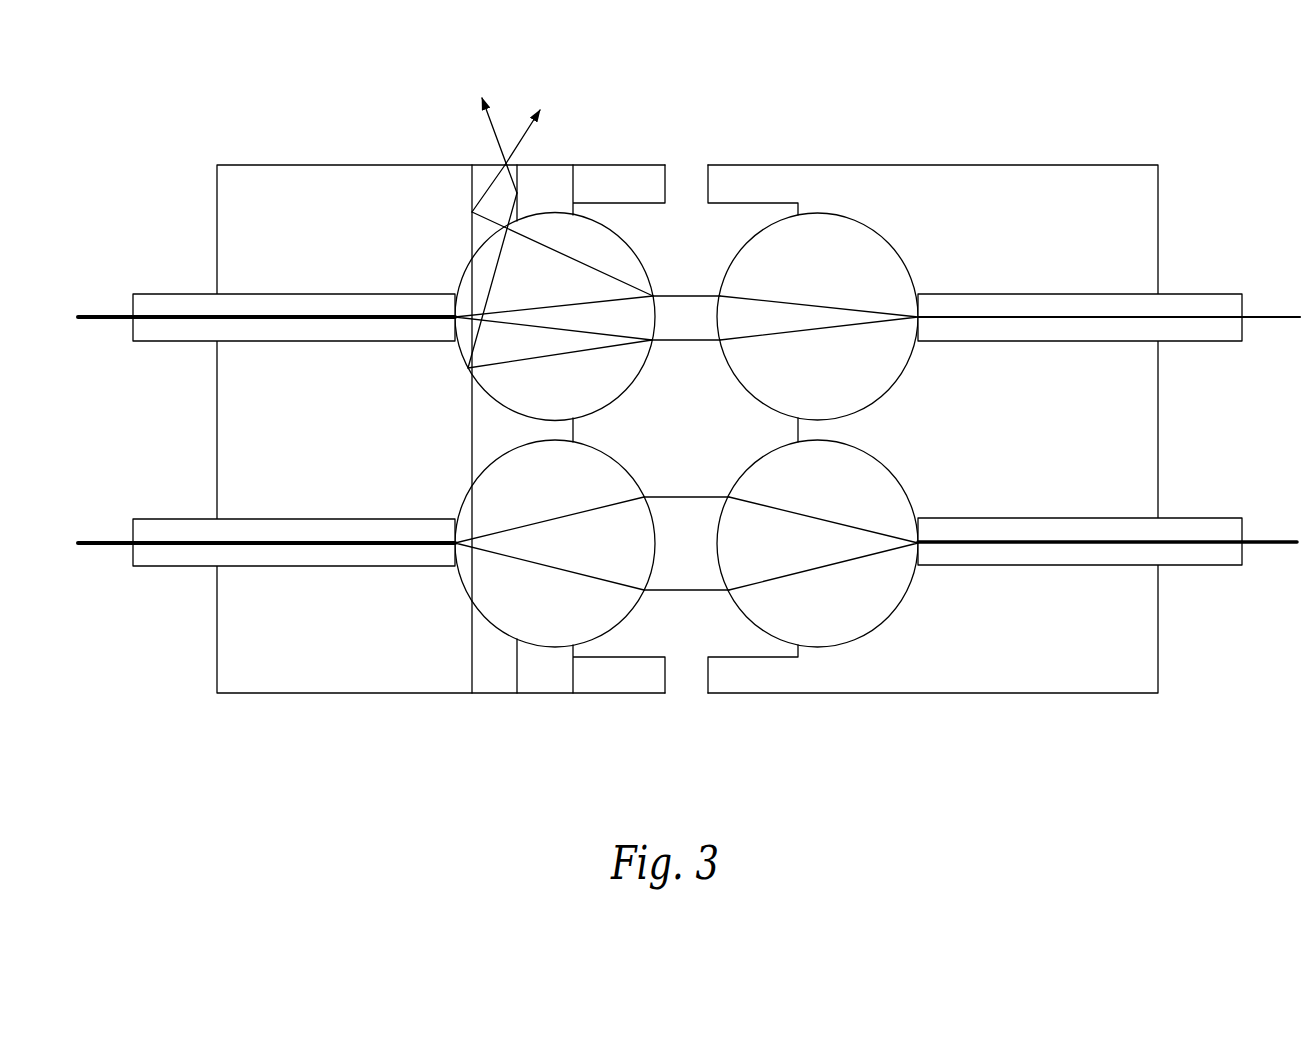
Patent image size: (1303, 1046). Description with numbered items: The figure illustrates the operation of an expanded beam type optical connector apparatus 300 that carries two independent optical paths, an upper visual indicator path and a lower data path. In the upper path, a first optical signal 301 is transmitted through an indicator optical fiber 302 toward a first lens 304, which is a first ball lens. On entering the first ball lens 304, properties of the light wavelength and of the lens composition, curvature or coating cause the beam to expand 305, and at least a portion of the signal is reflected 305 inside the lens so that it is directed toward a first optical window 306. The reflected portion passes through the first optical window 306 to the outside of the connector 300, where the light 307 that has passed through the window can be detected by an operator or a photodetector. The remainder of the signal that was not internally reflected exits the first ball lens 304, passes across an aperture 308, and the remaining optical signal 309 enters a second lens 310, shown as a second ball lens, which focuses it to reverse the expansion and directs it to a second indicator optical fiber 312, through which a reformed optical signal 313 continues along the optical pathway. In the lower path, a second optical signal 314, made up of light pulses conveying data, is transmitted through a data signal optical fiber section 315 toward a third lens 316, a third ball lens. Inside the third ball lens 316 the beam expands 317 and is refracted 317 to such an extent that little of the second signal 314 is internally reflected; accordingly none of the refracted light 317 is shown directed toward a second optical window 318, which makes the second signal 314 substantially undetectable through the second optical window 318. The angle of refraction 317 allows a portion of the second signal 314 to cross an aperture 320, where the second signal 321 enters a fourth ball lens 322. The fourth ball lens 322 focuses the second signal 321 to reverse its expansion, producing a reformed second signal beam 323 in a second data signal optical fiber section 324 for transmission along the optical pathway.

The optical connector apparatus 300 is at (178, 98).
The first optical signal 301 is at (98, 322).
The indicator optical fiber 302 is at (137, 348).
The first lens 304 is at (460, 258).
The expanded and reflected optical signal 305 is at (590, 297).
The first optical window 306 is at (476, 157).
The light passed through first optical window 307 is at (513, 116).
The aperture 308 is at (683, 310).
The remaining optical signal 309 is at (794, 297).
The second lens 310 is at (915, 260).
The second indicator optical fiber 312 is at (1238, 283).
The reformed optical signal 313 is at (1278, 322).
The second optical signal 314 is at (98, 548).
The data signal optical fiber section 315 is at (137, 573).
The third lens 316 is at (460, 486).
The expanded and refracted second signal 317 is at (581, 508).
The second optical window 318 is at (478, 702).
The aperture 320 is at (683, 512).
The second signal entering fourth ball lens 321 is at (797, 505).
The fourth ball lens 322 is at (915, 483).
The reformed second signal beam 323 is at (1278, 548).
The second data signal optical fiber section 324 is at (1238, 508).